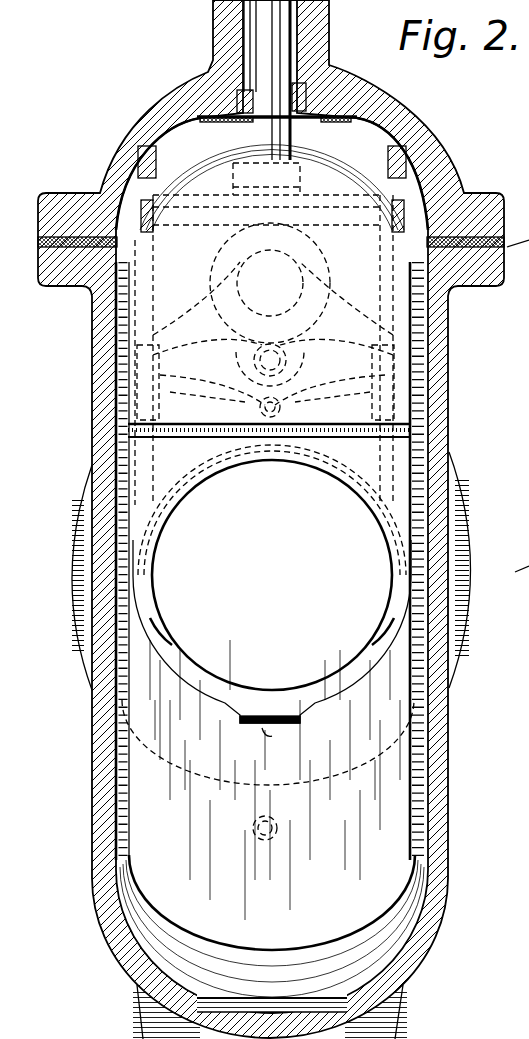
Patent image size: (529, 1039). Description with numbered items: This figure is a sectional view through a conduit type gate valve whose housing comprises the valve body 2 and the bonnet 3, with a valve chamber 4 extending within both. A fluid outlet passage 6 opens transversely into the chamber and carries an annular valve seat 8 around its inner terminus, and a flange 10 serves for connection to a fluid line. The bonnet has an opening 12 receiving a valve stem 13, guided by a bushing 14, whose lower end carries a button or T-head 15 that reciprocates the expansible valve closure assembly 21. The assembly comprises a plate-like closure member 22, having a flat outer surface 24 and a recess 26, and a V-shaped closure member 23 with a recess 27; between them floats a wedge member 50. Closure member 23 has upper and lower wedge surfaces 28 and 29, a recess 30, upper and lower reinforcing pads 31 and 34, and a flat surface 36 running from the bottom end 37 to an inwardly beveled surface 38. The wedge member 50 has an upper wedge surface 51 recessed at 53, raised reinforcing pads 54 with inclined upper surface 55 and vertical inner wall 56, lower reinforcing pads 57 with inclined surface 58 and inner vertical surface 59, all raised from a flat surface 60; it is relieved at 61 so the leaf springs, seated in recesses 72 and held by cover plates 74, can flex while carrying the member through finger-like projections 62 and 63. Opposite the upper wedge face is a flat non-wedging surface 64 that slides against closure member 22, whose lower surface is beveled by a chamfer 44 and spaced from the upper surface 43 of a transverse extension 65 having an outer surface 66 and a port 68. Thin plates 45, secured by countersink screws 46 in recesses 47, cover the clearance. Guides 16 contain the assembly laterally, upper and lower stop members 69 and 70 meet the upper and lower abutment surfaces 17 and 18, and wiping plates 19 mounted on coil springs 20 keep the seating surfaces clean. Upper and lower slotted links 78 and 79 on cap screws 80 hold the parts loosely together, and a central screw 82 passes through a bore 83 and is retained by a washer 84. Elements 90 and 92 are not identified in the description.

The valve body 2 is at (449, 888).
The bonnet 3 is at (400, 124).
The valve chamber 4 is at (455, 189).
The fluid outlet passage 6 is at (361, 562).
The valve seat 8 is at (340, 685).
The flange 10 is at (68, 645).
The opening 12 is at (243, 33).
The valve stem 13 is at (292, 36).
The bushing 14 is at (240, 96).
The button or T-head 15 is at (296, 168).
The guide 16 is at (432, 648).
The upper abutment surface 17 is at (418, 137).
The lower abutment surface 18 is at (270, 998).
The wiping plate 19 is at (395, 826).
The coil spring 20 is at (280, 372).
The valve closure assembly 21 is at (405, 616).
The closure member 22 is at (145, 293).
The closure member 23 is at (305, 718).
The outer surface 24 is at (450, 300).
The recess 26 is at (196, 163).
The recess 27 is at (320, 168).
The upper wedge surface 28 is at (320, 290).
The lower wedge surface 29 is at (360, 527).
The recess 30 is at (268, 268).
The upper reinforcing pad 31 is at (210, 262).
The lower reinforcing pad 34 is at (176, 525).
The flat surface 36 is at (270, 352).
The bottom end 37 is at (180, 500).
The inwardly beveled surface 38 is at (320, 268).
The upper surface 43 is at (160, 447).
The chamfer 44 is at (330, 428).
The thin plate 45 is at (120, 438).
The countersink screw 46 is at (150, 405).
The recess 47 is at (155, 462).
The wedge member 50 is at (430, 470).
The upper wedge surface 51 is at (235, 320).
The recess 53 is at (310, 270).
The raised reinforcing pad 54 is at (245, 290).
The inclined upper surface 55 is at (230, 232).
The vertical inner wall 56 is at (218, 272).
The lower reinforcing pad 57 is at (180, 515).
The inclined surface 58 is at (110, 495).
The inner vertical surface 59 is at (390, 470).
The flat surface 60 is at (292, 345).
The relief 61 is at (240, 330).
The finger-like projection 62 is at (140, 350).
The finger-like projection 63 is at (130, 408).
The flat non-wedging surface 64 is at (420, 330).
The extension 65 is at (130, 552).
The outer surface 66 is at (318, 448).
The port 68 is at (222, 685).
The upper stop member 69 is at (408, 162).
The lower stop member 70 is at (268, 732).
The recess 72 is at (175, 392).
The cover plate 74 is at (140, 375).
The upper slotted link 78 is at (410, 180).
The lower slotted link 79 is at (372, 660).
The cap screw 80 is at (165, 185).
The screw 82 is at (284, 398).
The bore 83 is at (270, 400).
The washer 84 is at (258, 400).
The bolt 90 is at (436, 316).
The pin 92 is at (210, 425).